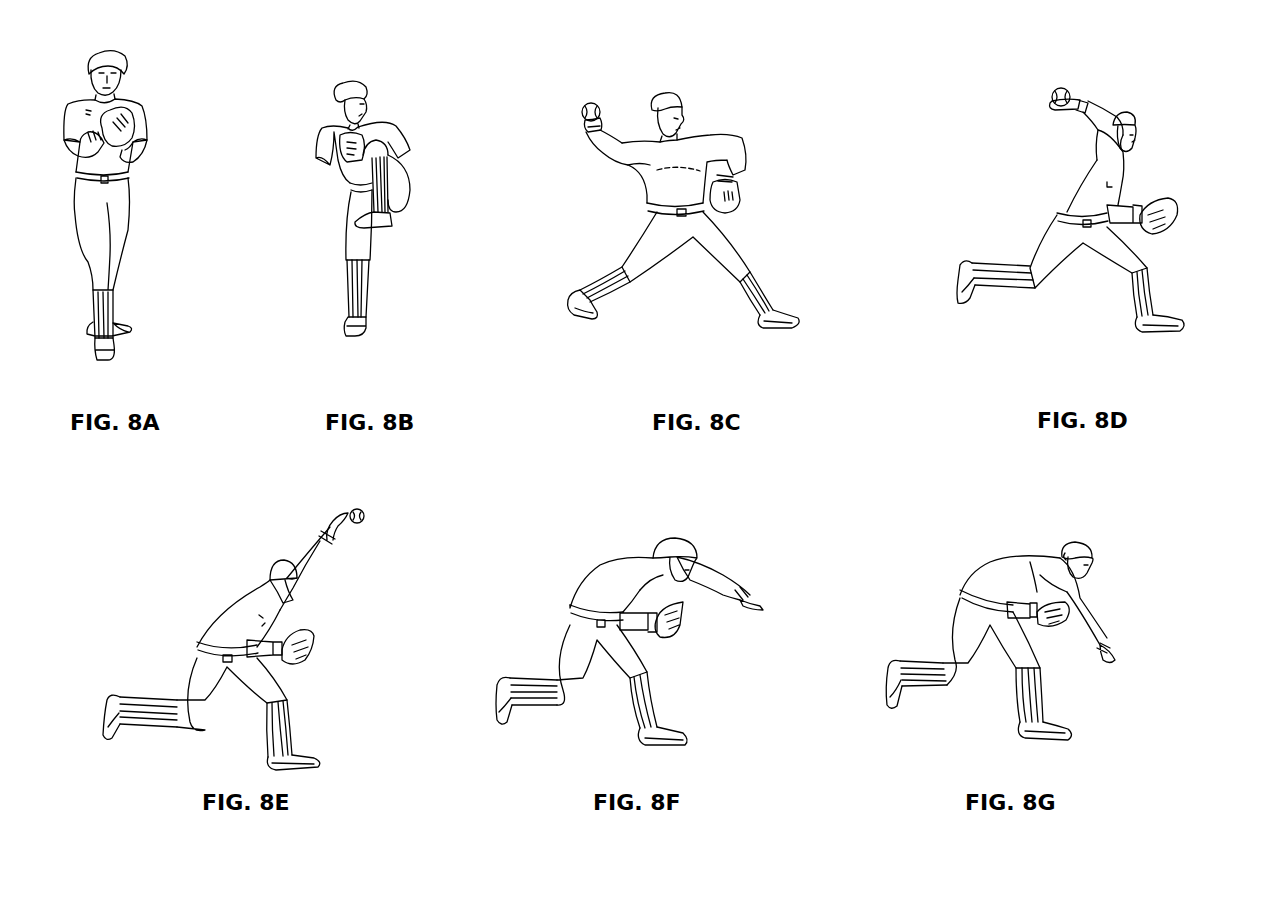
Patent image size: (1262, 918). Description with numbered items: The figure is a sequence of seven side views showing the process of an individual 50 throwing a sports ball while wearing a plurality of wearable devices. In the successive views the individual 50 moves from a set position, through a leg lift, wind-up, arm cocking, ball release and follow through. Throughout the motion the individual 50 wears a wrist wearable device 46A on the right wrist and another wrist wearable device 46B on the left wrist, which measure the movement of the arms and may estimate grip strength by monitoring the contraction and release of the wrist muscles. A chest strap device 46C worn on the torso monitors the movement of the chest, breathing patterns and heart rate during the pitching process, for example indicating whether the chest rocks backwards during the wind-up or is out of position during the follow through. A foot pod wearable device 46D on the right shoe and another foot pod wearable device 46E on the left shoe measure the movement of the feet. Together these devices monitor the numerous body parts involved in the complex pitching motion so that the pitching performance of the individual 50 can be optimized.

In FIG. 8A, the individual 50 is at (128, 105).
In FIG. 8B, the individual 50 is at (380, 120).
In FIG. 8C, the individual 50 is at (717, 133).
In FIG. 8D, the individual 50 is at (1125, 167).
In FIG. 8E, the individual 50 is at (230, 600).
In FIG. 8F, the individual 50 is at (603, 573).
In FIG. 8G, the individual 50 is at (997, 565).
In FIG. 8A, the wrist wearable device 46A is at (112, 163).
In FIG. 8C, the wrist wearable device 46A is at (583, 130).
In FIG. 8D, the wrist wearable device 46A is at (1082, 100).
In FIG. 8E, the wrist wearable device 46A is at (320, 533).
In FIG. 8F, the wrist wearable device 46A is at (740, 590).
In FIG. 8G, the wrist wearable device 46A is at (1110, 648).
In FIG. 8C, the wrist wearable device 46B is at (733, 177).
In FIG. 8D, the wrist wearable device 46B is at (1137, 232).
In FIG. 8E, the wrist wearable device 46B is at (277, 657).
In FIG. 8F, the wrist wearable device 46B is at (657, 633).
In FIG. 8G, the wrist wearable device 46B is at (1037, 633).
In FIG. 8C, the chest strap device 46C is at (650, 177).
In FIG. 8D, the chest strap device 46C is at (1118, 187).
In FIG. 8E, the chest strap device 46C is at (277, 617).
In FIG. 8F, the chest strap device 46C is at (640, 590).
In FIG. 8G, the chest strap device 46C is at (1030, 562).
In FIG. 8A, the foot pod wearable device 46D is at (113, 358).
In FIG. 8B, the foot pod wearable device 46D is at (362, 333).
In FIG. 8C, the foot pod wearable device 46D is at (597, 298).
In FIG. 8D, the foot pod wearable device 46D is at (968, 297).
In FIG. 8E, the foot pod wearable device 46D is at (120, 730).
In FIG. 8F, the foot pod wearable device 46D is at (512, 715).
In FIG. 8G, the foot pod wearable device 46D is at (900, 700).
In FIG. 8A, the foot pod wearable device 46E is at (127, 323).
In FIG. 8B, the foot pod wearable device 46E is at (357, 207).
In FIG. 8C, the foot pod wearable device 46E is at (790, 313).
In FIG. 8D, the foot pod wearable device 46E is at (1173, 323).
In FIG. 8E, the foot pod wearable device 46E is at (310, 757).
In FIG. 8F, the foot pod wearable device 46E is at (680, 733).
In FIG. 8G, the foot pod wearable device 46E is at (1062, 730).